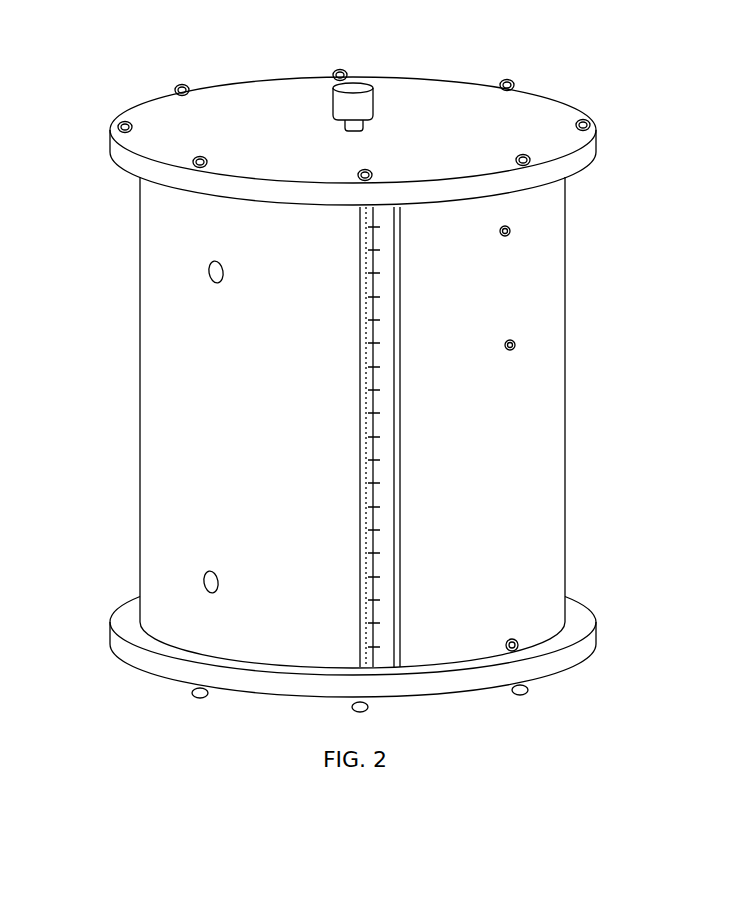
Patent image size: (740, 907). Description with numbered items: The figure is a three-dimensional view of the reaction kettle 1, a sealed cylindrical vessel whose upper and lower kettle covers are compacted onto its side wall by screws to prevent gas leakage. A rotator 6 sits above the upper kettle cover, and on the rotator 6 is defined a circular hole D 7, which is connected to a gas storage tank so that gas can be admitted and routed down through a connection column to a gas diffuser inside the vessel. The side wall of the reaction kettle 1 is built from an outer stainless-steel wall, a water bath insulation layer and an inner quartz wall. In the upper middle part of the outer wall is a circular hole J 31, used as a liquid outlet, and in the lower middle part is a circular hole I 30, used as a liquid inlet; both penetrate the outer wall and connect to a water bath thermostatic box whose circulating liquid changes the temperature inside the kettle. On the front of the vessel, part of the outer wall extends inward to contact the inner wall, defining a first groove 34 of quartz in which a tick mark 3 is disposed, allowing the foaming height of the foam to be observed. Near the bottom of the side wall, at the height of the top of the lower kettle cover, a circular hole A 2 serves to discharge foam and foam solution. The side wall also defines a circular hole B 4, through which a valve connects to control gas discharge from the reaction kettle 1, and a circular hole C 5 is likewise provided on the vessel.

The reaction kettle 1 is at (222, 473).
The circular hole A 2 is at (515, 645).
The tick mark 3 is at (363, 387).
The circular hole B 4 is at (512, 343).
The circular hole C 5 is at (507, 230).
The rotator 6 is at (372, 105).
The circular hole D 7 is at (355, 88).
The circular hole I 30 is at (205, 580).
The circular hole J 31 is at (207, 270).
The first groove 34 is at (392, 453).